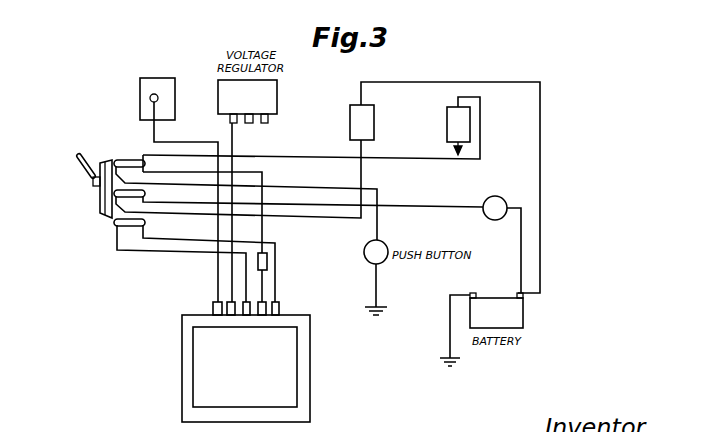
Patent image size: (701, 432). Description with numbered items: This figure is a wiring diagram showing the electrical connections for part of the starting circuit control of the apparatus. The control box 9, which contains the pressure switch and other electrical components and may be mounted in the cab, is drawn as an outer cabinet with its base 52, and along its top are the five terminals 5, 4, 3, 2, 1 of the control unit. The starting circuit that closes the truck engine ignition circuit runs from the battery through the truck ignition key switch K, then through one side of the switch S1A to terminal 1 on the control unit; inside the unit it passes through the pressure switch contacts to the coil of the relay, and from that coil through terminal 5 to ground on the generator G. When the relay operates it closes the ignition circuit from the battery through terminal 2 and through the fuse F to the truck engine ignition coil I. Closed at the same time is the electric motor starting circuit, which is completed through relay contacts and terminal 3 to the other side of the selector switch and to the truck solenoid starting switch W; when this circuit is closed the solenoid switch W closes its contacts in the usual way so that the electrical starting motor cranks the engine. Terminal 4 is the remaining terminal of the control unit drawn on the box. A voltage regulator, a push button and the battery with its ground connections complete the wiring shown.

The generator G is at (164, 78).
The truck solenoid starting switch W is at (375, 111).
The truck engine ignition coil I is at (447, 120).
The truck ignition key switch K is at (496, 196).
The fuse F is at (268, 262).
The switch S1A is at (107, 160).
The control box 9 is at (291, 372).
The base 52 is at (311, 404).
The terminal 1 is at (275, 314).
The terminal 2 is at (262, 314).
The terminal 3 is at (246, 314).
The terminal 4 is at (231, 314).
The terminal 5 is at (217, 314).